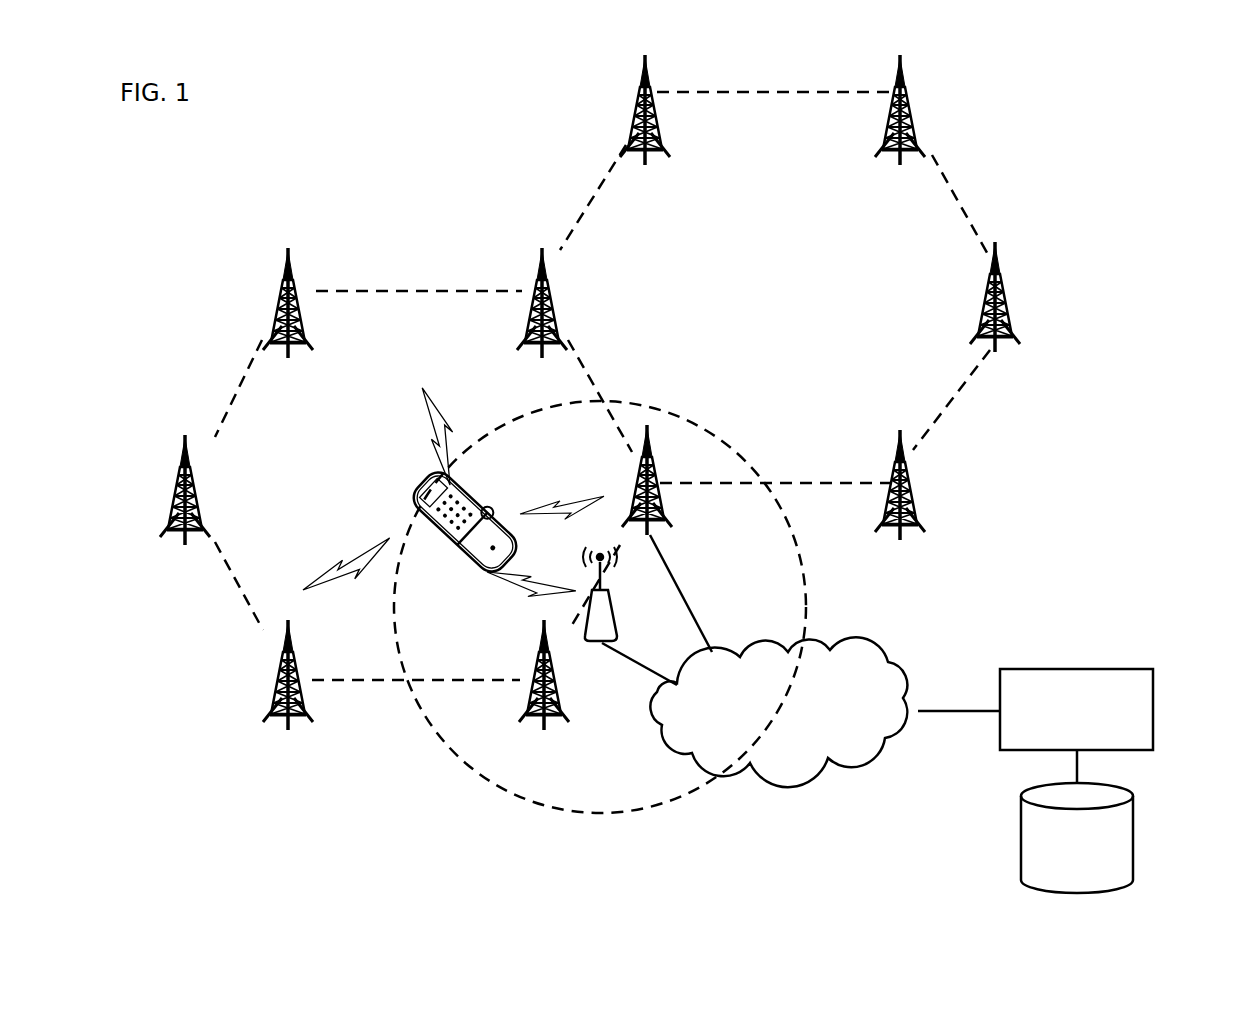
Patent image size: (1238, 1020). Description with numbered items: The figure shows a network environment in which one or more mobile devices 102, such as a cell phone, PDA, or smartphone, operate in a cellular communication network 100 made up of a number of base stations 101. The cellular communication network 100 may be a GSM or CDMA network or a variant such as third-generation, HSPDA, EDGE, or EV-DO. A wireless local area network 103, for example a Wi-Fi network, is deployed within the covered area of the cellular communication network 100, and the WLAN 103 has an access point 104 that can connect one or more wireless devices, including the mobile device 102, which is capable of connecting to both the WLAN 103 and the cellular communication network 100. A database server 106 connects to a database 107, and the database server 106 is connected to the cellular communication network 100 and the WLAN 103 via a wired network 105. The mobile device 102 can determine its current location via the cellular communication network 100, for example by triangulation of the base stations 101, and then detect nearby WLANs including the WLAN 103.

The cellular communication network 100 is at (940, 200).
The base station 101 is at (658, 104).
The mobile device 102 is at (490, 488).
The wireless local area network 103 is at (803, 578).
The access point 104 is at (602, 620).
The wired network 105 is at (801, 661).
The database server 106 is at (1156, 712).
The database 107 is at (1135, 845).